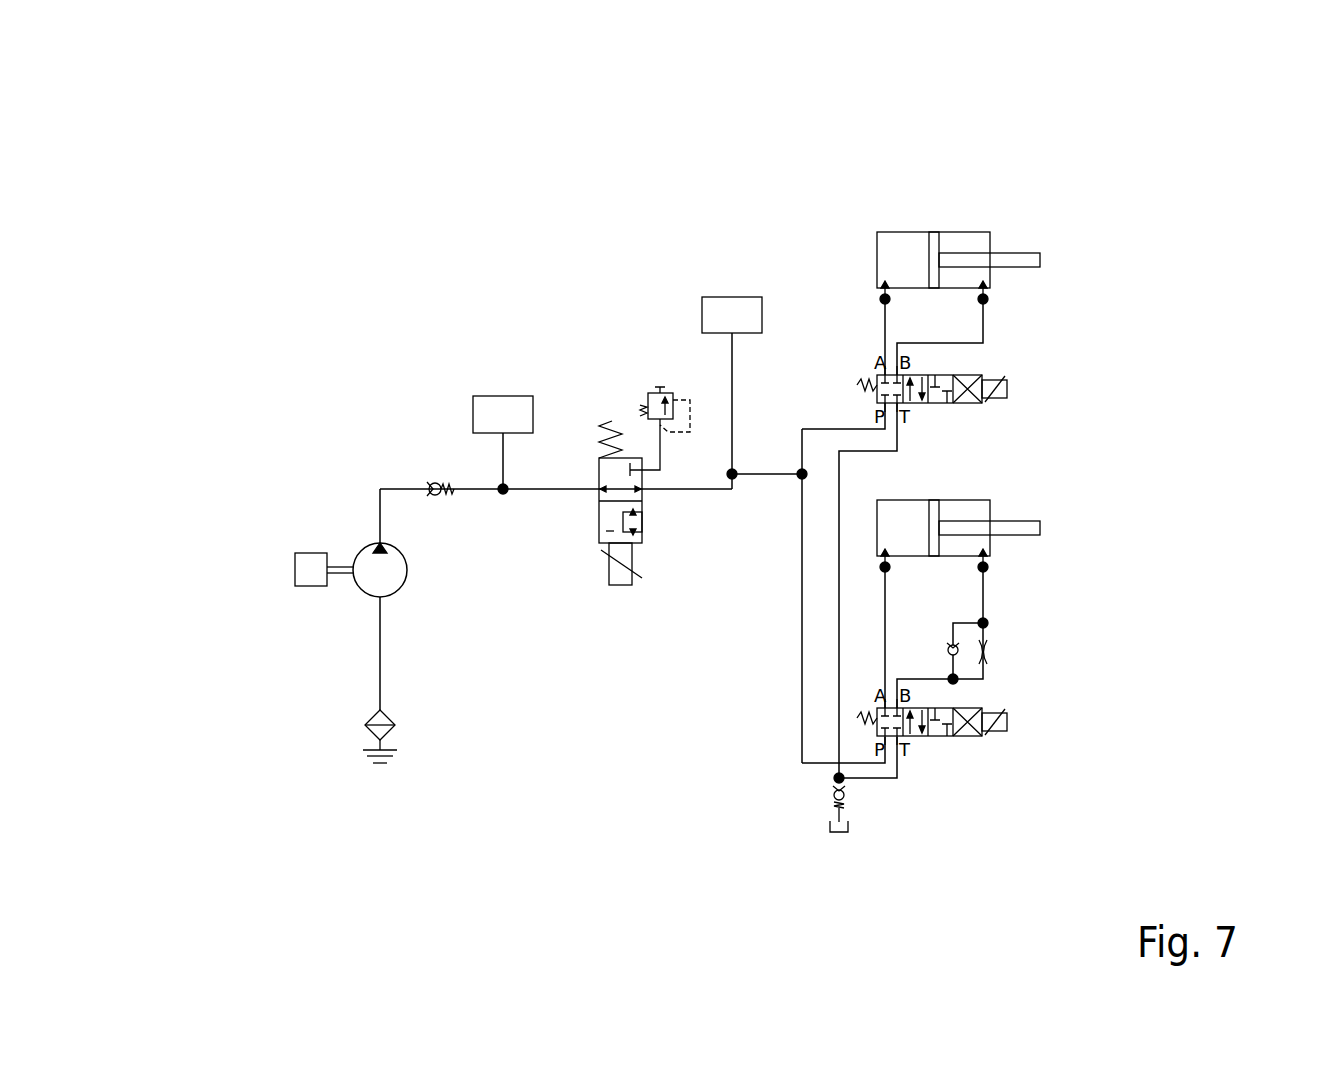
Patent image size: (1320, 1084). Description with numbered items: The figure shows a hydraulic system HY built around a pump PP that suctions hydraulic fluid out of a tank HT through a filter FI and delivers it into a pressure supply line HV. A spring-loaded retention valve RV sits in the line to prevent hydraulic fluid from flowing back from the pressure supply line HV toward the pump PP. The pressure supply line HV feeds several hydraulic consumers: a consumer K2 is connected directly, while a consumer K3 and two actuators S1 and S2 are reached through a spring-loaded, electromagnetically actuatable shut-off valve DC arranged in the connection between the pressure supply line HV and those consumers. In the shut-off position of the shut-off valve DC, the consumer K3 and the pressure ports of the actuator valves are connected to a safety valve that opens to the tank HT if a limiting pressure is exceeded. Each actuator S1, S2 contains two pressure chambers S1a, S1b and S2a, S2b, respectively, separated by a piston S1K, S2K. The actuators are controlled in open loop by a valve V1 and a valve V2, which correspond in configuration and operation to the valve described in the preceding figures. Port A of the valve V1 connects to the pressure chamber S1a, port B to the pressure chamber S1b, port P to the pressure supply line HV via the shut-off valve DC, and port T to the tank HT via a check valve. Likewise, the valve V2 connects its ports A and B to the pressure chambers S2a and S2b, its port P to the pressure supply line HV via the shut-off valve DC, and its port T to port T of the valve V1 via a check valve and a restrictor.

The hydraulic system HY is at (332, 302).
The retention valve RV is at (420, 478).
The pump PP is at (350, 542).
The filter FI is at (358, 710).
The tank HT is at (357, 763).
The consumer K2 is at (503, 396).
The pressure supply line HV is at (557, 489).
The consumer K3 is at (730, 297).
The shut-off valve DC is at (617, 590).
The actuator S1 is at (930, 212).
The pressure chamber S1a is at (896, 246).
The pressure chamber S1b is at (972, 242).
The piston S1K is at (1033, 253).
The valve V1 is at (1020, 360).
The actuator S2 is at (972, 483).
The pressure chamber S2a is at (905, 512).
The pressure chamber S2b is at (977, 509).
The piston S2K is at (1026, 527).
The valve V2 is at (1037, 718).